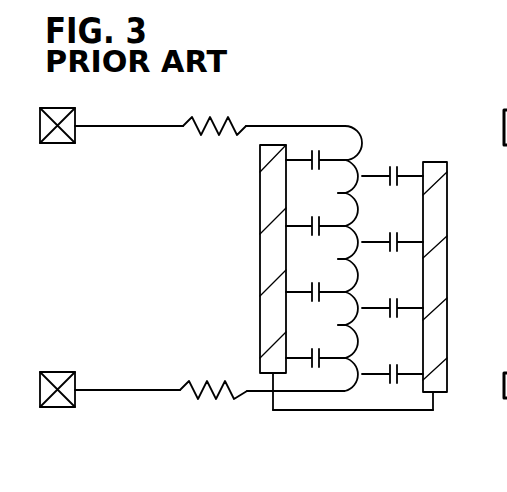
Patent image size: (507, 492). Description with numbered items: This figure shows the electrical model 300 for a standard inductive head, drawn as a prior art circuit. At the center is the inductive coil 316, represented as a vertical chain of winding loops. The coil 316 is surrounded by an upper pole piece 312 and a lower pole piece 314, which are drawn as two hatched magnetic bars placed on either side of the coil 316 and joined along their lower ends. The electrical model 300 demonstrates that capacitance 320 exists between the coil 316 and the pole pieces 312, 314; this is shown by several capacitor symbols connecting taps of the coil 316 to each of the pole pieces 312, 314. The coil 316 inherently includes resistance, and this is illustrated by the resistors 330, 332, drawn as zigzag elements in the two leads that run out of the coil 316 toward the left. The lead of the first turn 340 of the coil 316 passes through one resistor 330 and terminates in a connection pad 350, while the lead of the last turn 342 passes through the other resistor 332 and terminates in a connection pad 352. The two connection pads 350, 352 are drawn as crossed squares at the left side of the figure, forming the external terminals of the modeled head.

The electrical model 300 is at (275, 83).
The upper pole piece 312 is at (440, 207).
The lower pole piece 314 is at (270, 206).
The inductive coil 316 is at (333, 399).
The capacitance 320 is at (395, 160).
The resistor 330 is at (180, 118).
The resistor 332 is at (188, 382).
The first turn 340 is at (100, 125).
The last turn 342 is at (122, 390).
The connection pad 350 is at (62, 143).
The connection pad 352 is at (67, 372).